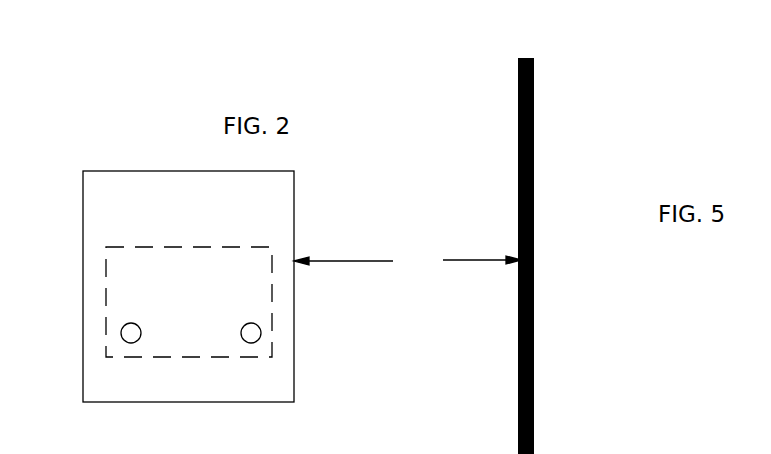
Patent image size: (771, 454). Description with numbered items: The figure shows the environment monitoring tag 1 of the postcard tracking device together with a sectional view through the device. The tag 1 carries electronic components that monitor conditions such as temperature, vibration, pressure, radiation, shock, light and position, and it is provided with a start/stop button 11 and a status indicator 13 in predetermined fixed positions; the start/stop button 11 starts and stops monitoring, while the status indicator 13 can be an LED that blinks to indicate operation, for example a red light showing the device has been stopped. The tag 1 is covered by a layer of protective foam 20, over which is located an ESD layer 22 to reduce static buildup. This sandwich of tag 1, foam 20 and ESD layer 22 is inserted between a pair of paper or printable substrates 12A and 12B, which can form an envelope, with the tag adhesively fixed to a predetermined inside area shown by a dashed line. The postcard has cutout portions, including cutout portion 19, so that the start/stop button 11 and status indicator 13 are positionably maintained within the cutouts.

In FIG. 2, the tag 1 is at (303, 259).
In FIG. 5, the tag 1 is at (475, 258).
In FIG. 2, the start/stop button 11 is at (120, 332).
In FIG. 2, the status indicator 13 is at (262, 333).
In FIG. 5, the status indicator 13 is at (534, 333).
In FIG. 5, the substrate 12A is at (519, 125).
In FIG. 5, the substrate 12B is at (534, 107).
In FIG. 5, the cutout portion 19 is at (519, 350).
In FIG. 2, the protective foam 20 is at (294, 202).
In FIG. 5, the protective foam 20 is at (519, 202).
In FIG. 5, the ESD layer 22 is at (534, 240).